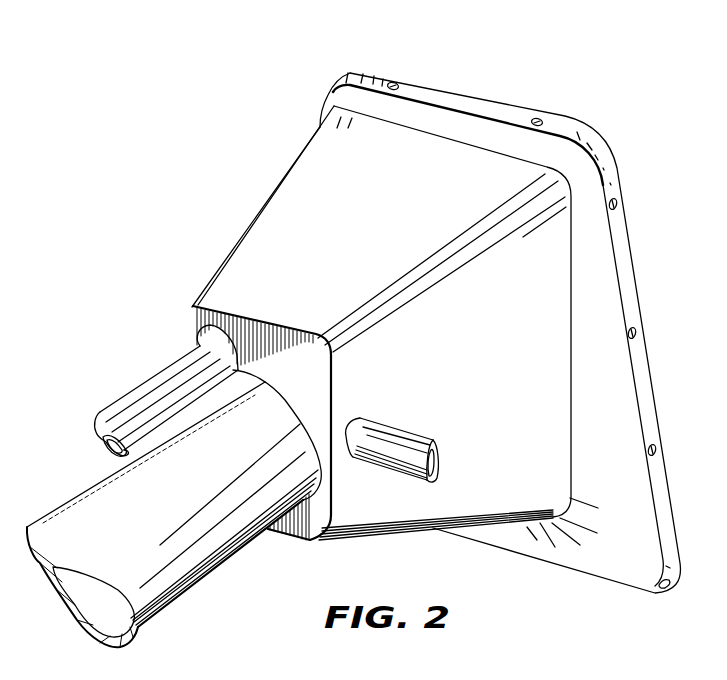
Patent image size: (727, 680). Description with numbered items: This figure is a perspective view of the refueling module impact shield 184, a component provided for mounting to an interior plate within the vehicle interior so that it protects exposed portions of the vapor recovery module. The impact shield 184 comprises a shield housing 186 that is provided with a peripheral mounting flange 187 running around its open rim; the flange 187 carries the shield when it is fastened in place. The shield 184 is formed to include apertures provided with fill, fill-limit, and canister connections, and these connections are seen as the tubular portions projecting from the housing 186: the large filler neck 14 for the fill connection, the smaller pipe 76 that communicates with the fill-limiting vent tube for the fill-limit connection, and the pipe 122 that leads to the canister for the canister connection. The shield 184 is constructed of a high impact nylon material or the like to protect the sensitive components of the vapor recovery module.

The refueling module impact shield 184 is at (540, 92).
The shield housing 186 is at (300, 212).
The peripheral mounting flange 187 is at (632, 293).
The filler neck 14 is at (171, 567).
The pipe 76 is at (127, 423).
The pipe 122 is at (408, 442).